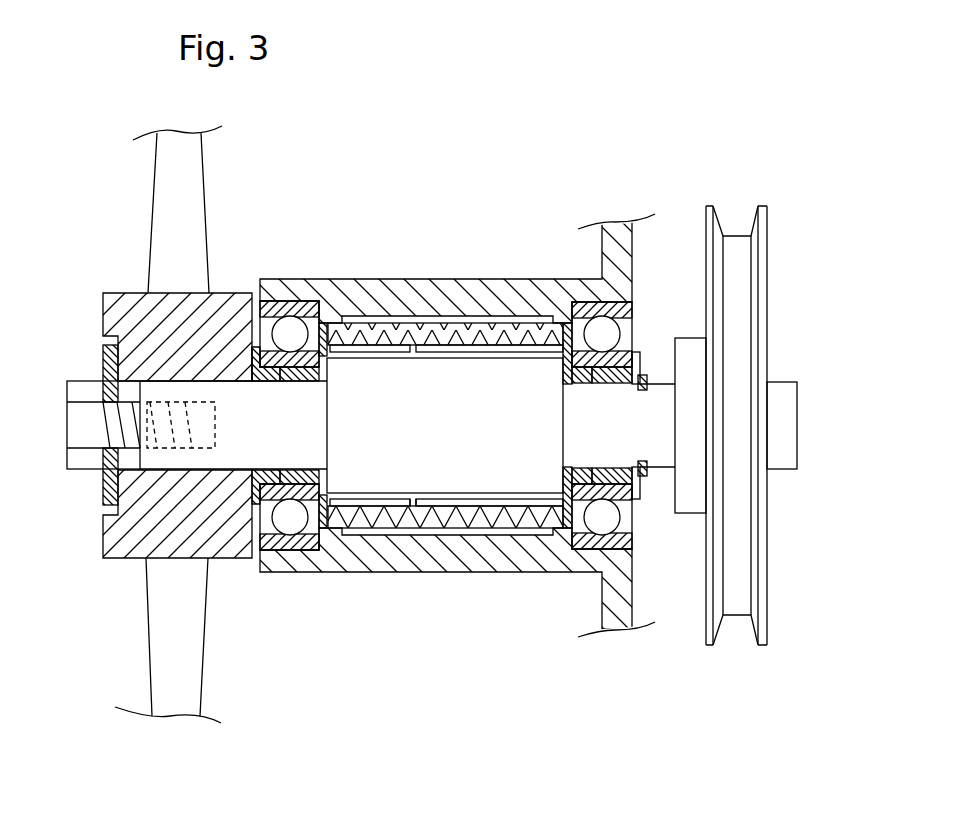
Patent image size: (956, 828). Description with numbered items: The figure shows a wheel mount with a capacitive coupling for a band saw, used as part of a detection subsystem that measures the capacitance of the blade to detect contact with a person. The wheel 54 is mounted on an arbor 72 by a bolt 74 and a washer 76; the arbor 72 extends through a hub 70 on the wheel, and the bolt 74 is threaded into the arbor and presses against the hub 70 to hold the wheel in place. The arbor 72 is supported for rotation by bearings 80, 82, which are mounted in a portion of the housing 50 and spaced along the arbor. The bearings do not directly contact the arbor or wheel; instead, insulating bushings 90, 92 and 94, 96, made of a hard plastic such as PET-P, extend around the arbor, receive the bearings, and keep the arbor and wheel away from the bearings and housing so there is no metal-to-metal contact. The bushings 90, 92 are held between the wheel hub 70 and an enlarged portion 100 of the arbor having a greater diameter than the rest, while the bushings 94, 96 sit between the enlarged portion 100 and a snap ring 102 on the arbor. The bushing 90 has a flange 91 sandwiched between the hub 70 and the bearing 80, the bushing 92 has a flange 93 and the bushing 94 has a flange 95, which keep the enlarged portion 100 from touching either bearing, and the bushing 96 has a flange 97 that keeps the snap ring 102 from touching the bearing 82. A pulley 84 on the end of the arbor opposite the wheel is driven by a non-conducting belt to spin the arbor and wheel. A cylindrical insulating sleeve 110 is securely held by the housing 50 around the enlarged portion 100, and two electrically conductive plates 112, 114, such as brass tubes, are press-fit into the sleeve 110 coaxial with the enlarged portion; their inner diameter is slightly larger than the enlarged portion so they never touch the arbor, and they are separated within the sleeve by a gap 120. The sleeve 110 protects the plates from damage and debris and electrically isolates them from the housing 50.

The wheel 54 is at (163, 232).
The housing 50 is at (398, 287).
The insulating sleeve 110 is at (451, 335).
The hub 70 is at (110, 311).
The washer 76 is at (102, 360).
The bolt 74 is at (67, 385).
The arbor 72 is at (267, 454).
The enlarged portion 100 is at (537, 462).
The bearing 80 is at (268, 303).
The bearing 82 is at (633, 316).
The insulating bushing 90 is at (268, 373).
The flange 91 is at (254, 366).
The insulating bushing 92 is at (303, 373).
The flange 93 is at (324, 358).
The insulating bushing 94 is at (575, 475).
The flange 95 is at (565, 369).
The insulating bushing 96 is at (620, 471).
The flange 97 is at (641, 353).
The snap ring 102 is at (647, 471).
The conductive plate 112 is at (429, 353).
The conductive plate 114 is at (357, 353).
The gap 120 is at (413, 500).
The pulley 84 is at (768, 299).